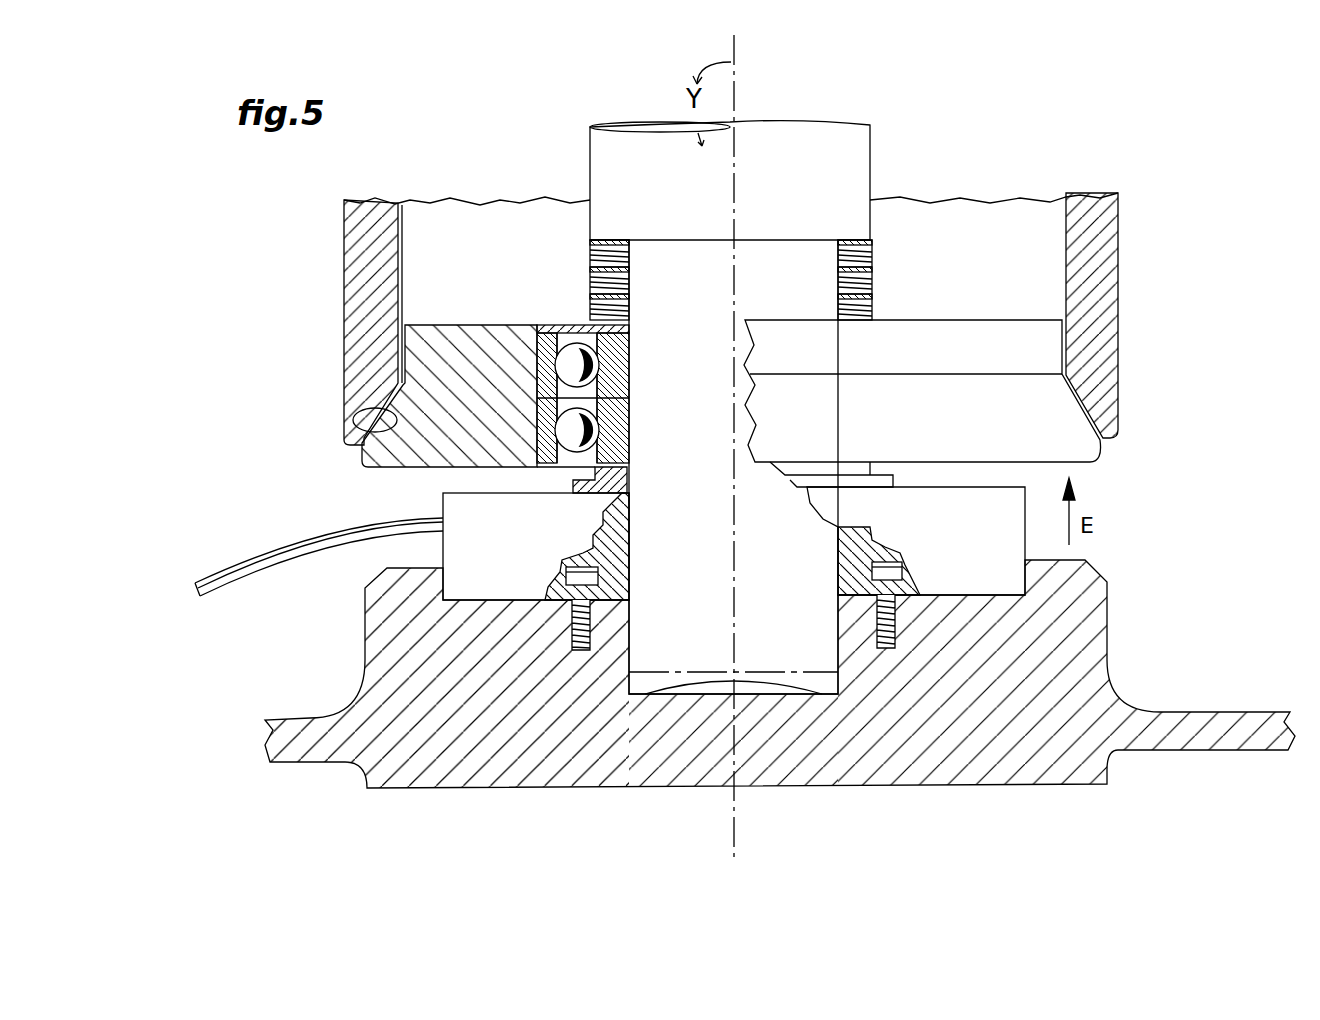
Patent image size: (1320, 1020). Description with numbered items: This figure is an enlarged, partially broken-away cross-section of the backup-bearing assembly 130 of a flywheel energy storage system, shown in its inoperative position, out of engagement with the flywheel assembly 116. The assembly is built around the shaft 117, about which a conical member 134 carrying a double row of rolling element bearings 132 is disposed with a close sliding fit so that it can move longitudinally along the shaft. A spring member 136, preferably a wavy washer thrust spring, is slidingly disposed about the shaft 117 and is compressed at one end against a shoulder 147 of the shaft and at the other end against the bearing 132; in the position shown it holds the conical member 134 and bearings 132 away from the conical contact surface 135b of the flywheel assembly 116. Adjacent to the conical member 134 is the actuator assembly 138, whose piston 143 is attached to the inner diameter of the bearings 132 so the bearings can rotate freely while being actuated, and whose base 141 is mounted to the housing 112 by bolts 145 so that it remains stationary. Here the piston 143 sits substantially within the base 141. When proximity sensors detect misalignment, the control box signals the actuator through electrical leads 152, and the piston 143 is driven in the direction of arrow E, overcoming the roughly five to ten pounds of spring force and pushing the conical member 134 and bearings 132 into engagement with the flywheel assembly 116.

The housing 112 is at (1102, 705).
The flywheel assembly 116 is at (1093, 284).
The shaft 117 is at (705, 552).
The backup-bearing assembly 130 is at (293, 455).
The rolling element bearings 132 is at (590, 398).
The conical member 134 is at (437, 350).
The conical shaped contact surface 135b is at (368, 430).
The spring member 136 is at (898, 275).
The actuator assembly 138 is at (1143, 513).
The base 141 is at (524, 563).
The piston 143 is at (576, 483).
The bolts 145 is at (883, 573).
The shoulder 147 is at (604, 255).
The electrical leads 152 is at (262, 560).